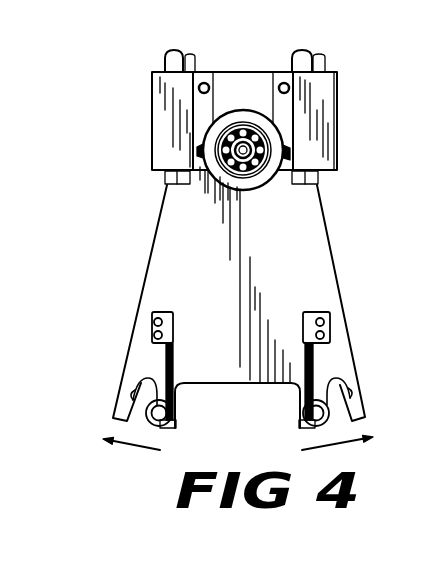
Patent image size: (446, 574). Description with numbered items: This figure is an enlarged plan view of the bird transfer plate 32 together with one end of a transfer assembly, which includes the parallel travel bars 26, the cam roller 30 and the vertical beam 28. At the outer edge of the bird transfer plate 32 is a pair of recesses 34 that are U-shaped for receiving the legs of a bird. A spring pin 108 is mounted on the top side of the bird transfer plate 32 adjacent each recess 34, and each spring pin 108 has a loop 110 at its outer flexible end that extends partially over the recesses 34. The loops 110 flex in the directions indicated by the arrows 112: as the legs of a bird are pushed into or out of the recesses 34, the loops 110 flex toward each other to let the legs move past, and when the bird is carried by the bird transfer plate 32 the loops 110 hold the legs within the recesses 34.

The parallel travel bars 26 is at (195, 66).
The vertical beam 28 is at (250, 85).
The cam roller 30 is at (283, 137).
The bird transfer plate 32 is at (321, 264).
The recesses 34 is at (135, 385).
The spring pin 108 is at (208, 352).
The loop 110 is at (298, 420).
The arrows 112 is at (130, 446).